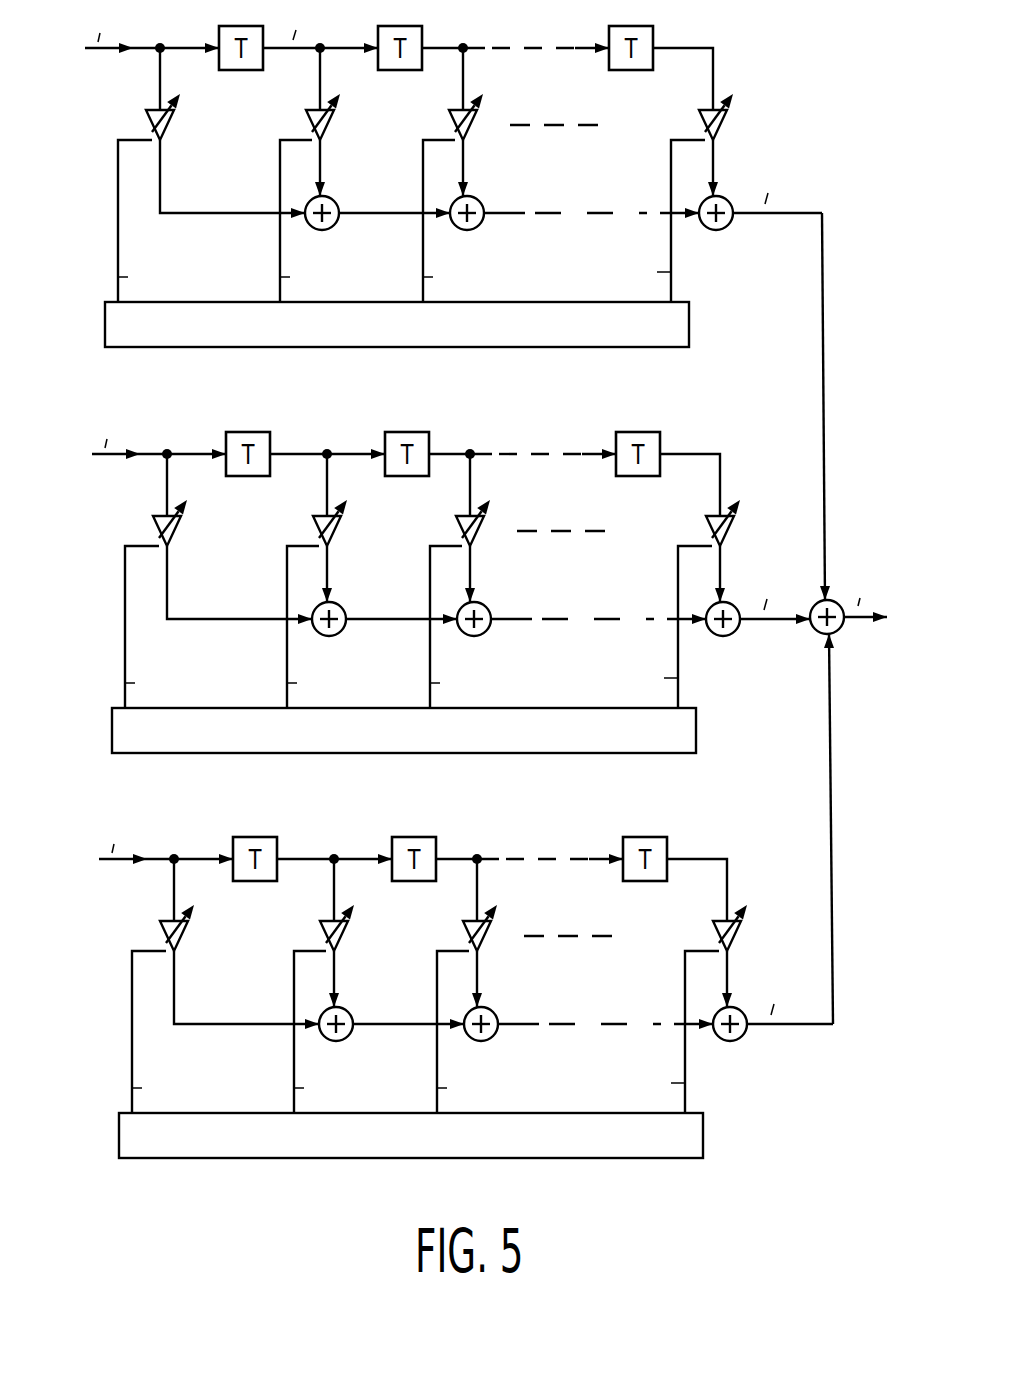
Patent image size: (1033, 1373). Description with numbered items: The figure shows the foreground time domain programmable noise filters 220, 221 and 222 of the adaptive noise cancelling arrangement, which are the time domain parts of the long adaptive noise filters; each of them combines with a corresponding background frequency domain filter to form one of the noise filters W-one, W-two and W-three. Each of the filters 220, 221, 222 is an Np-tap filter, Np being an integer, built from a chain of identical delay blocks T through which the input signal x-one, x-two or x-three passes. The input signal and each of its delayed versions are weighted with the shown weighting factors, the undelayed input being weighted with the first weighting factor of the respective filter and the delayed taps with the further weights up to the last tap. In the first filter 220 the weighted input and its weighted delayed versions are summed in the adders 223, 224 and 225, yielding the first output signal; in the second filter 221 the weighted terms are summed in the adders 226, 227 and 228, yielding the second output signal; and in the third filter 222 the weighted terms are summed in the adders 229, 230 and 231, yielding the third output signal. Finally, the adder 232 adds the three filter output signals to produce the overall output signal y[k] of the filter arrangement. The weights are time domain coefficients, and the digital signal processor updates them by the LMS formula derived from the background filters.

The foreground time domain programmable noise filter 220 is at (421, 173).
The foreground time domain programmable noise filter 221 is at (421, 580).
The foreground time domain programmable noise filter 222 is at (435, 985).
The adder 223 is at (337, 204).
The adder 224 is at (482, 204).
The adder 225 is at (716, 230).
The adder 226 is at (360, 606).
The adder 227 is at (505, 606).
The adder 228 is at (723, 646).
The adder 229 is at (367, 1011).
The adder 230 is at (512, 1011).
The adder 231 is at (730, 1051).
The adder 232 is at (818, 632).